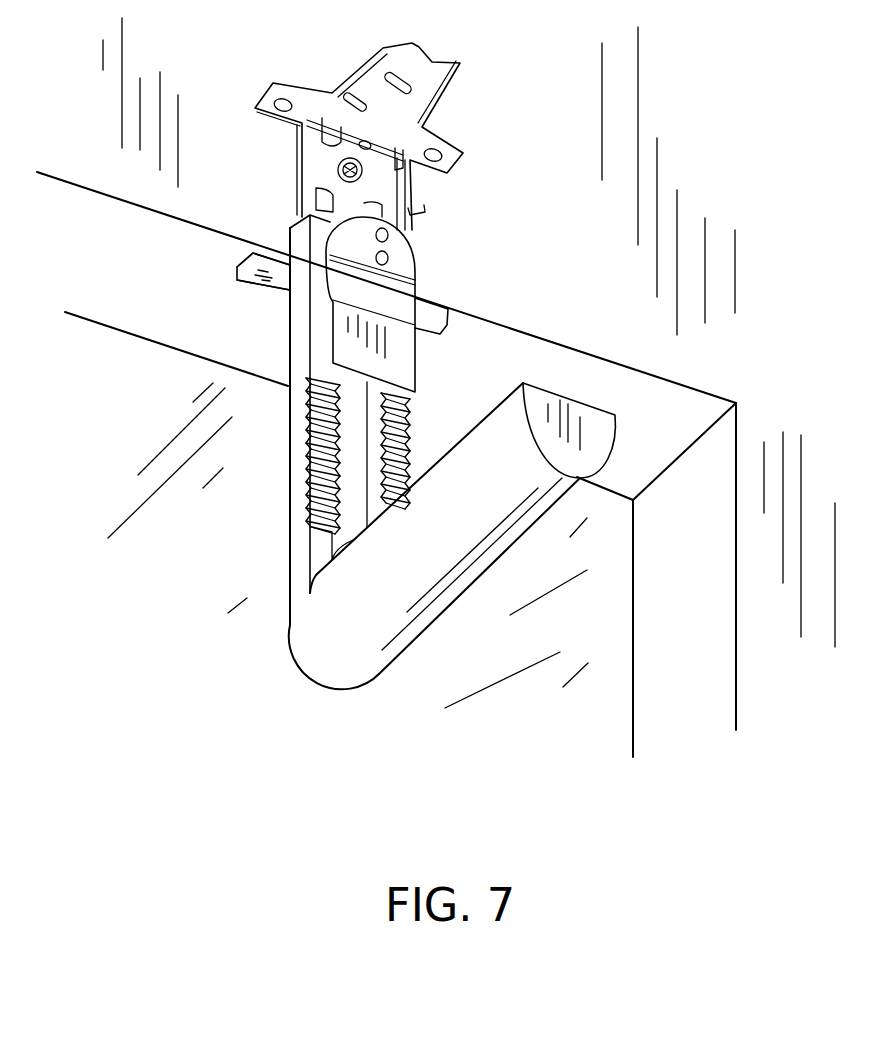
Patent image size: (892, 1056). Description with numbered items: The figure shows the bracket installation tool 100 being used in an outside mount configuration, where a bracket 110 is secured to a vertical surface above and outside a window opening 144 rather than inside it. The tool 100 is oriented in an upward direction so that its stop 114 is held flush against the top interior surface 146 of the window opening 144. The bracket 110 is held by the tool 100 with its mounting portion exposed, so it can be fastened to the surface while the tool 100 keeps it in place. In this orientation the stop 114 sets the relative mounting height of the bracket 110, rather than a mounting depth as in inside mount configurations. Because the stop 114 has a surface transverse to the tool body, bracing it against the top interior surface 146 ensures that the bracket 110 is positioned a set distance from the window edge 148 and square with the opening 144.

The bracket installation tool 100 is at (224, 589).
The bracket 110 is at (435, 78).
The stop 114 is at (437, 307).
The window opening 144 is at (126, 289).
The top interior surface 146 is at (540, 357).
The window edge 148 is at (182, 217).